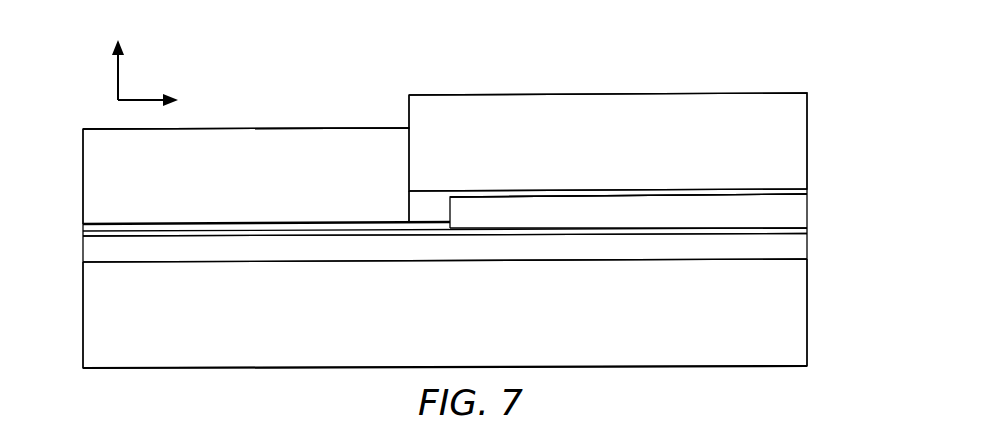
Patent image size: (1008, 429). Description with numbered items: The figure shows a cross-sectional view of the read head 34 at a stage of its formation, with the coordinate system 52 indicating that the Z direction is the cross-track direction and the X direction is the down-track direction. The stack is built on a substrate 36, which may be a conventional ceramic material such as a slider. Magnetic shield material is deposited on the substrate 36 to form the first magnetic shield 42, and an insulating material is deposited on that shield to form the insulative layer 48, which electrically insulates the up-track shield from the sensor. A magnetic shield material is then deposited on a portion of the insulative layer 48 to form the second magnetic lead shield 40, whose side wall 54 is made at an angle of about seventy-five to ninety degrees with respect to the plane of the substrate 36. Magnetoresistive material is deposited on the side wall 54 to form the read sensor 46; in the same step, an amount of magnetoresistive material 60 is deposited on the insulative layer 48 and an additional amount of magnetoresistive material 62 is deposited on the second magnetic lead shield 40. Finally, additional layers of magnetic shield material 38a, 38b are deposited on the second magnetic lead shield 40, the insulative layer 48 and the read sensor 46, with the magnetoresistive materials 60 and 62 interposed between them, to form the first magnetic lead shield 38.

The read head 34 is at (752, 77).
The substrate 36 is at (800, 316).
The first magnetic lead shield 38 is at (105, 204).
The layer of magnetic shield material 38a is at (254, 160).
The layer of magnetic shield material 38b is at (612, 107).
The second magnetic lead shield 40 is at (800, 208).
The first magnetic shield 42 is at (803, 247).
The read sensor 46 is at (425, 203).
The insulative layer 48 is at (803, 229).
The coordinate system 52 is at (118, 78).
The side wall 54 is at (442, 206).
The magnetoresistive material on insulative layer 60 is at (88, 226).
The magnetoresistive material on second magnetic shield 62 is at (808, 191).